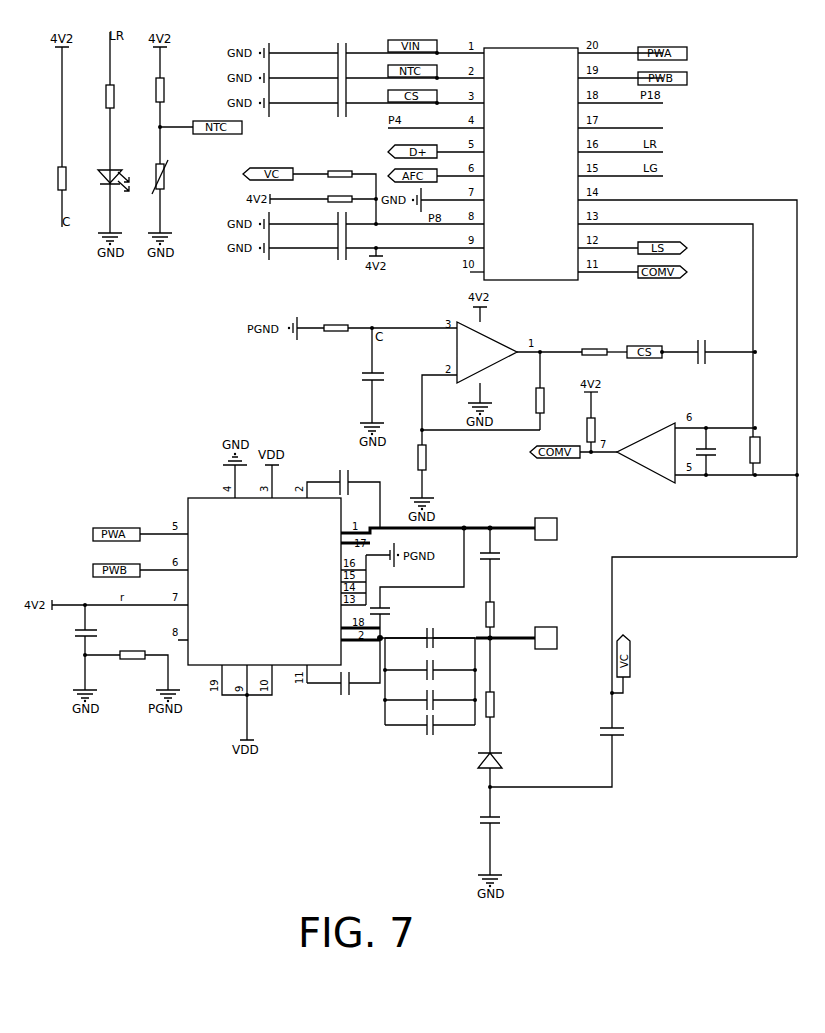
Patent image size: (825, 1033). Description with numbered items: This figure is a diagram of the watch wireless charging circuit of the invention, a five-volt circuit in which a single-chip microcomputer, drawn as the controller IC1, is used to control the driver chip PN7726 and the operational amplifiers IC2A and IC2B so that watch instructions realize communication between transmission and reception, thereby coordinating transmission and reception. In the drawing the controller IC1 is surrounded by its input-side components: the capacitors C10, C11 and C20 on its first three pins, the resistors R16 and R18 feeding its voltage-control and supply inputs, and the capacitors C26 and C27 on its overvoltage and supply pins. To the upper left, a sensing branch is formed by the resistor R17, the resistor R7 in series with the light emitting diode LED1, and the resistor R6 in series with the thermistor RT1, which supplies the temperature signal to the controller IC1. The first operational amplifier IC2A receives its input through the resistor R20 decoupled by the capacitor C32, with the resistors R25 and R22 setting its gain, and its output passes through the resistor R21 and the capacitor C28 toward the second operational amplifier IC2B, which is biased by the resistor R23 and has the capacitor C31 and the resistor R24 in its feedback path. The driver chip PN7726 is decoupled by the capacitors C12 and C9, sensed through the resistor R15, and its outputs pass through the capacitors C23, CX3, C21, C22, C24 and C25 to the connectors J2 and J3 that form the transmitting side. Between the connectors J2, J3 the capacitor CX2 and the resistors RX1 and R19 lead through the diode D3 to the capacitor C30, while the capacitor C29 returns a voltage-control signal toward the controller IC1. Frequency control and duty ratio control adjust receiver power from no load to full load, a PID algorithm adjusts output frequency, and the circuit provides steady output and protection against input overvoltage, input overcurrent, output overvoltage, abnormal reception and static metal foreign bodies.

The resistor R17 4M7 R17 is at (75, 178).
The resistor R7 10K R7 is at (125, 94).
The light emitting diode LED1 is at (120, 170).
The resistor R6 10K R6 is at (173, 91).
The thermistor RT1 is at (170, 177).
The capacitor C10 104 C10 is at (376, 78).
The capacitor C11 104 C11 is at (376, 71).
The capacitor C20 222 C20 is at (376, 96).
The controller IC1 WXC710 IC1 is at (531, 165).
The resistor R16 220K R16 is at (334, 189).
The resistor R18 47K R18 is at (323, 191).
The capacitor C26 102 C26 is at (376, 234).
The capacitor C27 105 C27 is at (376, 262).
The resistor R20 4K7 R20 is at (377, 320).
The capacitor C32 103 C32 is at (360, 375).
The operational amplifier IC2A 358 IC2A is at (487, 355).
The resistor R25 4K7 R25 is at (437, 464).
The resistor R22 220K R22 is at (524, 391).
The resistor R21 10K R21 is at (589, 345).
The capacitor C28 472 C28 is at (708, 349).
The operational amplifier IC2B 358 IC2B is at (646, 447).
The capacitor C31 102 C31 is at (719, 451).
The resistor R24 100K R24 is at (772, 451).
The resistor R23 10K R23 is at (578, 422).
The element PN7726 is at (264, 581).
The capacitor C12 225 C12 is at (72, 647).
The resistor R15 22mR R15 is at (126, 671).
The capacitor C9 103 C9 is at (343, 495).
The capacitor C23 103 C23 is at (343, 672).
The capacitor CX3 472 CX3 is at (417, 583).
The capacitor C21 104 C21 is at (430, 641).
The capacitor C22 104 C22 is at (430, 673).
The capacitor C24 104 C24 is at (430, 703).
The capacitor C25 NC C25 is at (430, 730).
The connector J2 is at (546, 522).
The connector J3 is at (546, 649).
The capacitor CX2 471 CX2 is at (503, 565).
The resistor RX1 39R RX1 is at (506, 642).
The resistor R19 22K R19 is at (509, 722).
The diode D3 4148 D3 is at (508, 766).
The capacitor C30 102 C30 is at (506, 831).
The capacitor C29 222 C29 is at (625, 733).